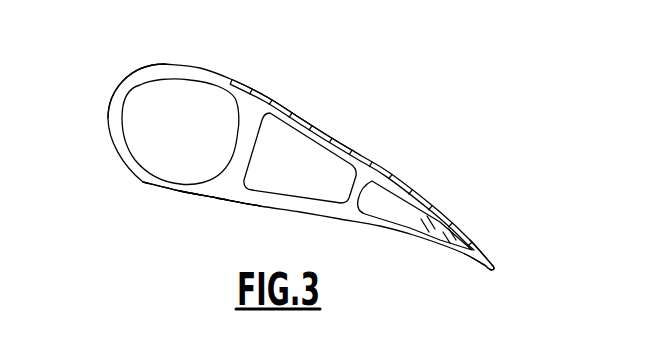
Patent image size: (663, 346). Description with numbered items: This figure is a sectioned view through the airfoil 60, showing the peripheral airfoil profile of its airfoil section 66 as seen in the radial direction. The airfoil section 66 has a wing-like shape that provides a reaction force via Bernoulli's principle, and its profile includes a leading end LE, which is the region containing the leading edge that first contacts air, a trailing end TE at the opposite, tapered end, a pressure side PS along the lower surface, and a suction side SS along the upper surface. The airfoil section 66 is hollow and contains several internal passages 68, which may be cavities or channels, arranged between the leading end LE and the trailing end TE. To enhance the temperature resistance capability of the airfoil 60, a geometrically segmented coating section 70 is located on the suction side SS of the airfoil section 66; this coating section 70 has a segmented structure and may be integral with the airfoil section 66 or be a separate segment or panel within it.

The airfoil 60 is at (115, 191).
The airfoil section 66 is at (217, 200).
The internal passages 68 is at (195, 142).
The geometrically segmented coating section 70 is at (277, 101).
The leading end LE is at (111, 94).
The trailing end TE is at (478, 277).
The suction side SS is at (332, 136).
The pressure side PS is at (187, 194).